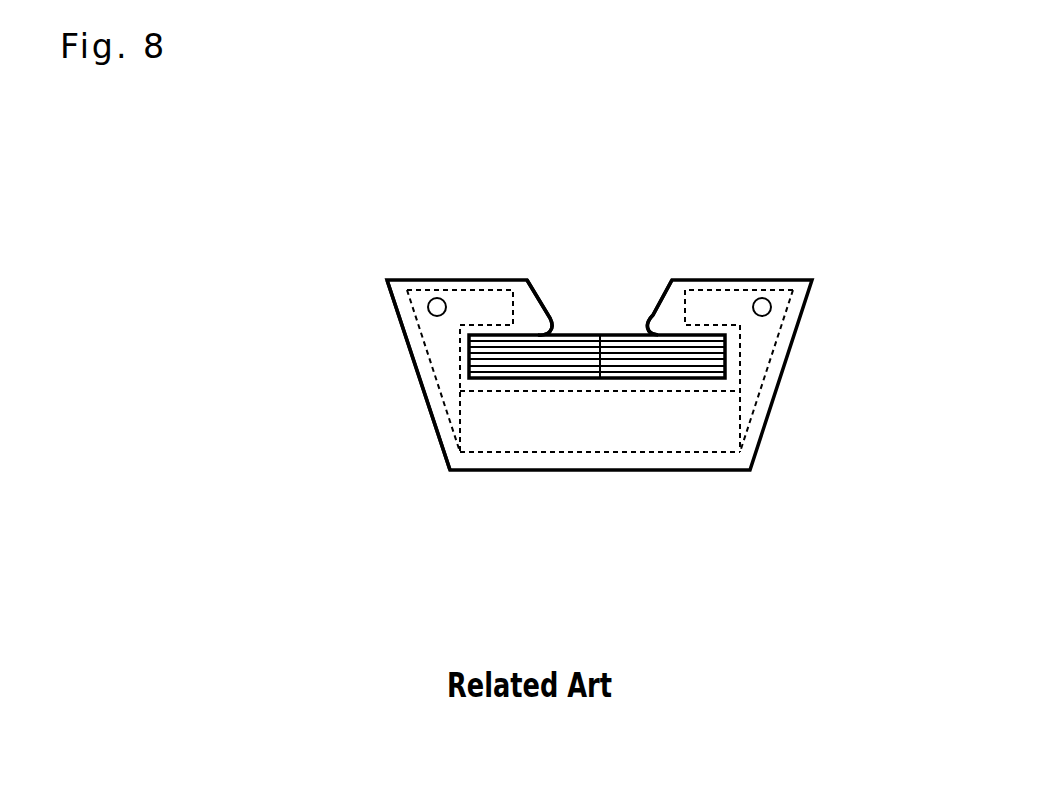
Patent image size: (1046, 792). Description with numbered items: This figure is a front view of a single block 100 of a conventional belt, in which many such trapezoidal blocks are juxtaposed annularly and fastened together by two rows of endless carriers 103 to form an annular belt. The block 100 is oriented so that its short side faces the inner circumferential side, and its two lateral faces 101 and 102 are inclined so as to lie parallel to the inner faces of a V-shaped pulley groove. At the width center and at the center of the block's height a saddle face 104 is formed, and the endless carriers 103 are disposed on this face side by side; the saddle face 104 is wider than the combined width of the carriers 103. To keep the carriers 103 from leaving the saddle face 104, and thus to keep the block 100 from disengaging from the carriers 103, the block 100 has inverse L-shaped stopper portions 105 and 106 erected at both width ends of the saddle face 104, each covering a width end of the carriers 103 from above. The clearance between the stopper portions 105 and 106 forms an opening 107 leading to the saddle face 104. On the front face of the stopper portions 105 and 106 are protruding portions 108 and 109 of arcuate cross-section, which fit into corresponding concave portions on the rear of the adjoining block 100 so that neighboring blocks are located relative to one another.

The block 100 is at (295, 223).
The lateral face 101 is at (787, 362).
The lateral face 102 is at (405, 337).
The endless carrier 103 is at (640, 363).
The saddle face 104 is at (687, 365).
The stopper portion 105 is at (708, 297).
The stopper portion 106 is at (494, 300).
The opening 107 is at (551, 318).
The protruding portion 108 is at (767, 299).
The protruding portion 109 is at (434, 298).